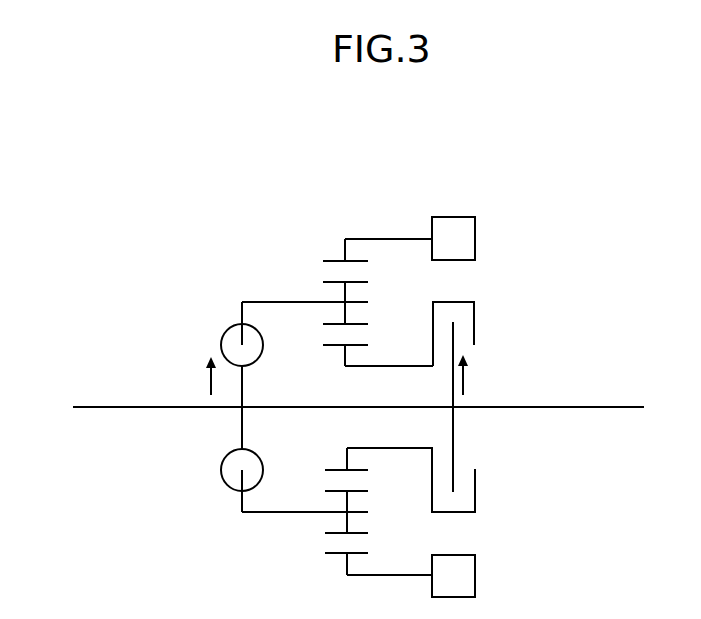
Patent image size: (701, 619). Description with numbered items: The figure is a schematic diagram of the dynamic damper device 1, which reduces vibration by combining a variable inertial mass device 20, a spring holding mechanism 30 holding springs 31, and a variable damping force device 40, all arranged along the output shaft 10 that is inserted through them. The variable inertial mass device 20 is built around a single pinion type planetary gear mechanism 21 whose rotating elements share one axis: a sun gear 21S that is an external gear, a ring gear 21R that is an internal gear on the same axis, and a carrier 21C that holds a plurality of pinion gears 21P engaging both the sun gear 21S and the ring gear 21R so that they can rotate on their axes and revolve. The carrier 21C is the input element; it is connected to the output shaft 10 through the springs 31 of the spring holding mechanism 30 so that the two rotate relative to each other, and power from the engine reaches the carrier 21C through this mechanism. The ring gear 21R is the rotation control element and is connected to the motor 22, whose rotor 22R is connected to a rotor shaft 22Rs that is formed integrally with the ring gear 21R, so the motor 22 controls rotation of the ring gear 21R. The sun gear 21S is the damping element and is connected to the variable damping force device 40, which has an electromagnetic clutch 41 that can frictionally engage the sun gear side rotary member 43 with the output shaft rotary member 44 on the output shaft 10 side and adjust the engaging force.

The dynamic damper device 1 is at (385, 166).
The output shaft 10 is at (105, 409).
The variable inertial mass device 20 is at (333, 222).
The planetary gear mechanism 21 is at (314, 547).
The sun gear 21S is at (333, 474).
The carrier 21C is at (288, 510).
The pinion gear 21P is at (369, 490).
The ring gear 21R is at (369, 553).
The motor 22 is at (453, 206).
The rotor 22R is at (476, 238).
The rotor shaft 22Rs is at (385, 237).
The spring holding mechanism 30 is at (167, 503).
The spring 31 is at (221, 345).
The variable damping force device 40 is at (532, 459).
The electromagnetic clutch 41 is at (480, 437).
The sun gear side rotary member 43 is at (476, 320).
The output shaft rotary member 44 is at (455, 348).